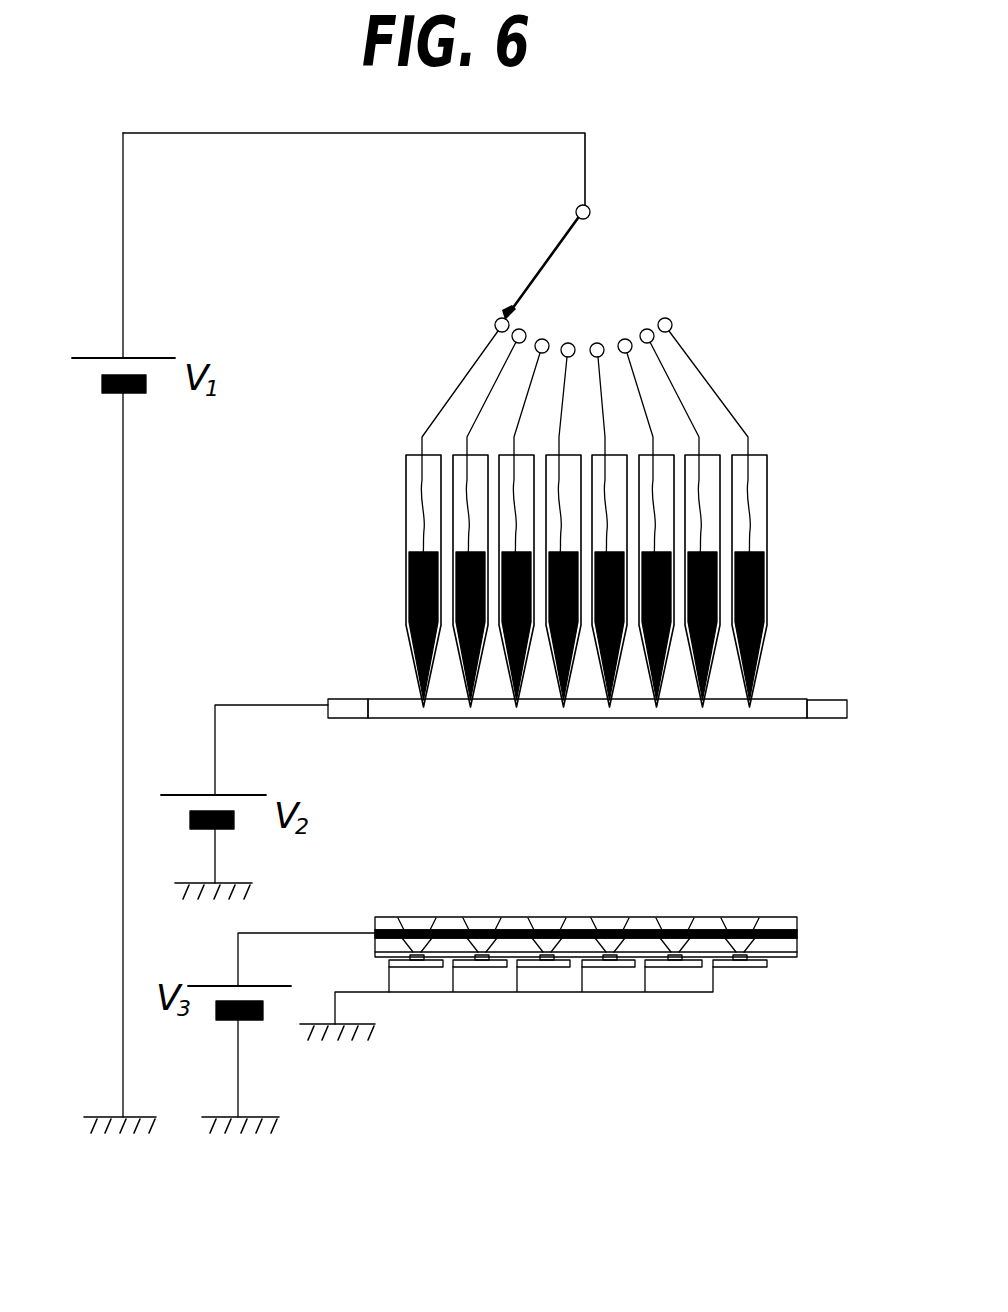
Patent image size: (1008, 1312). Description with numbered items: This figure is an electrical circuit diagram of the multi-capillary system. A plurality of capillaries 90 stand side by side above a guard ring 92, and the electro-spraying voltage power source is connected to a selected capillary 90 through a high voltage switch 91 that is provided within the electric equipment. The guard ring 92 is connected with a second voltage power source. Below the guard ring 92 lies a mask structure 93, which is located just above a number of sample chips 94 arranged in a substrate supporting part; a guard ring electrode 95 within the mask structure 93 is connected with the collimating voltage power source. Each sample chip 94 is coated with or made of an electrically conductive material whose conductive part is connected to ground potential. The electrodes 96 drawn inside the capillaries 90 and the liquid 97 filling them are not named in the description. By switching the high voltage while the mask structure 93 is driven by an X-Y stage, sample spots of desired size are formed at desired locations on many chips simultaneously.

The capillaries 90 is at (406, 493).
The high voltage switch 91 is at (607, 273).
The guard ring 92 is at (342, 698).
The mask structure 93 is at (712, 918).
The sample chips 94 is at (745, 968).
The guard ring electrode 95 is at (797, 934).
The electrode wires 96 is at (421, 527).
The ink 97 is at (408, 613).